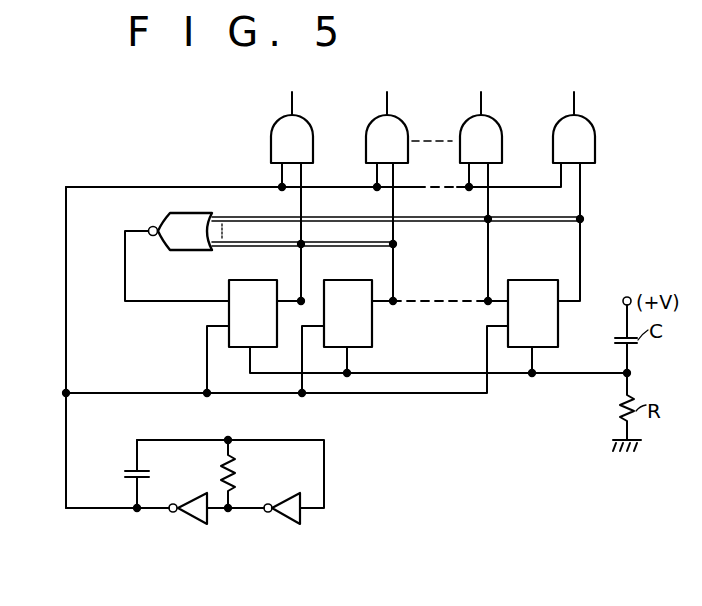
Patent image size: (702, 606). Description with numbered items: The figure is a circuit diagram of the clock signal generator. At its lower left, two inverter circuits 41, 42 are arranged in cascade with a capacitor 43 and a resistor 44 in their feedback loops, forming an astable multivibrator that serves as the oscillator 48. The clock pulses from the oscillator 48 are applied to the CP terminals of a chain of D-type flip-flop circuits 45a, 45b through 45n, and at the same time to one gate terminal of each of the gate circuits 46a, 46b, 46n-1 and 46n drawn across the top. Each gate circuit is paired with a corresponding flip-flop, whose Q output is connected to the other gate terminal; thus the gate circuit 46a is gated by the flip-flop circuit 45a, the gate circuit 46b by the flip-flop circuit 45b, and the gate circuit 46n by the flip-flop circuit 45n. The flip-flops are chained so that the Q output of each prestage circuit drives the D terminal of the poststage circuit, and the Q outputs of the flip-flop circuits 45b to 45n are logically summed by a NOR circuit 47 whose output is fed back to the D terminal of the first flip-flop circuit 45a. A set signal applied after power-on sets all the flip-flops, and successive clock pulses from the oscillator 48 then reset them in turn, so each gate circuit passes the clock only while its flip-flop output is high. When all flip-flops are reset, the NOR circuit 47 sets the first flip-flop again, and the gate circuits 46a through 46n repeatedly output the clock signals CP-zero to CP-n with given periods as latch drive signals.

The inverter circuit 41 is at (186, 496).
The inverter circuit 42 is at (284, 500).
The capacitor 43 is at (128, 474).
The resistor 44 is at (236, 486).
The D-type flip-flop circuit 45a is at (237, 350).
The D-type flip-flop circuit 45b is at (374, 336).
The D-type flip-flop circuit 45n is at (559, 336).
The gate circuit 46a is at (313, 140).
The gate circuit 46b is at (408, 140).
The gate circuit 46n-1 is at (514, 122).
The gate circuit 46n is at (597, 140).
The NOR circuit 47 is at (177, 247).
The oscillator 48 is at (224, 518).